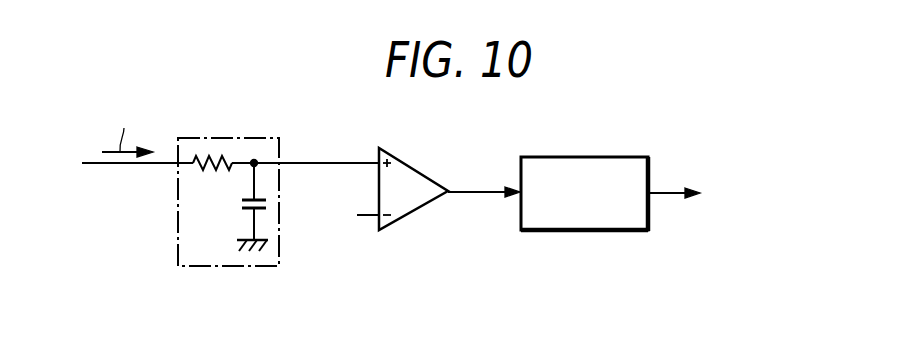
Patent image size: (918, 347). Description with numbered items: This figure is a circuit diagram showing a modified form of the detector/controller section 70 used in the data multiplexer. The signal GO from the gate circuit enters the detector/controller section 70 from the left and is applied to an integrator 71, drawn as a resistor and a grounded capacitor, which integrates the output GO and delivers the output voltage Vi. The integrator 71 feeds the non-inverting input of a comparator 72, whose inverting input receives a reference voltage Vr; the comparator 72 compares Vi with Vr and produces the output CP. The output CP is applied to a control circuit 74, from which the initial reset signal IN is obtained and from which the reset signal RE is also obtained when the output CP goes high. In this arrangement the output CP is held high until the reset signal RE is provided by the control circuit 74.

The detector/controller section 70 is at (427, 217).
The integrator 71 is at (197, 266).
The comparator 72 is at (418, 208).
The control circuit 74 is at (542, 230).